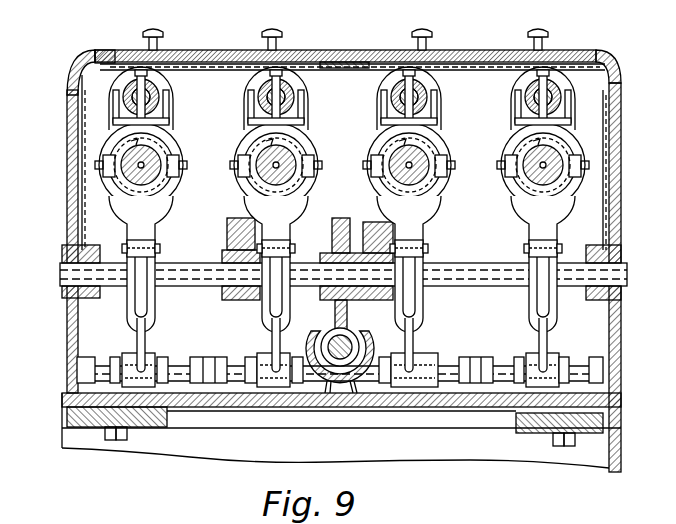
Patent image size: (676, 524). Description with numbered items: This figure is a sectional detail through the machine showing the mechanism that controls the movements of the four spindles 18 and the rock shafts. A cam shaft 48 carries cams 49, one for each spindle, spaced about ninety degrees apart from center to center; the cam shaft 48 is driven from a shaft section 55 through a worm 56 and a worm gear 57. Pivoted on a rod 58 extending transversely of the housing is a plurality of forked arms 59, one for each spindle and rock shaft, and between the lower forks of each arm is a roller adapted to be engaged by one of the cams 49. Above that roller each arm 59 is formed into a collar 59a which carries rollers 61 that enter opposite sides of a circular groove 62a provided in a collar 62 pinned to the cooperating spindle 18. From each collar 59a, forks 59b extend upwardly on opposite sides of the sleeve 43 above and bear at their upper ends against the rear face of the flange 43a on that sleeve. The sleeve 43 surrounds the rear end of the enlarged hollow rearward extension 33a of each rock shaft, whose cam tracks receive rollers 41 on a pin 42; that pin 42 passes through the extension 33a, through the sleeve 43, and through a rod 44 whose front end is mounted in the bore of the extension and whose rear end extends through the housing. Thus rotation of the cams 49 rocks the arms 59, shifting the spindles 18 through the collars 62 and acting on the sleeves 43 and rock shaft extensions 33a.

The spindle 18 is at (150, 176).
The enlarged hollow rearward extension 33a is at (151, 90).
The rollers 41 is at (132, 87).
The pin 42 is at (142, 75).
The sleeve 43 is at (158, 108).
The flange 43a is at (401, 79).
The rod 44 is at (130, 100).
The cam shaft 48 is at (193, 264).
The cams 49 is at (152, 232).
The shaft section 55 is at (342, 356).
The worm 56 is at (352, 342).
The worm gear 57 is at (336, 233).
The rod 58 is at (505, 366).
The forked arms 59 is at (141, 343).
The collar 59a is at (183, 151).
The forks 59b is at (247, 99).
The rollers 61 is at (172, 177).
The collar 62 is at (118, 184).
The circular groove 62a is at (309, 199).